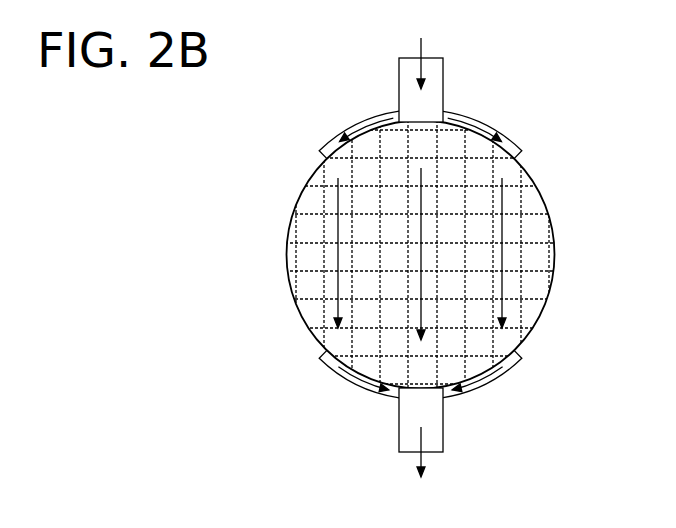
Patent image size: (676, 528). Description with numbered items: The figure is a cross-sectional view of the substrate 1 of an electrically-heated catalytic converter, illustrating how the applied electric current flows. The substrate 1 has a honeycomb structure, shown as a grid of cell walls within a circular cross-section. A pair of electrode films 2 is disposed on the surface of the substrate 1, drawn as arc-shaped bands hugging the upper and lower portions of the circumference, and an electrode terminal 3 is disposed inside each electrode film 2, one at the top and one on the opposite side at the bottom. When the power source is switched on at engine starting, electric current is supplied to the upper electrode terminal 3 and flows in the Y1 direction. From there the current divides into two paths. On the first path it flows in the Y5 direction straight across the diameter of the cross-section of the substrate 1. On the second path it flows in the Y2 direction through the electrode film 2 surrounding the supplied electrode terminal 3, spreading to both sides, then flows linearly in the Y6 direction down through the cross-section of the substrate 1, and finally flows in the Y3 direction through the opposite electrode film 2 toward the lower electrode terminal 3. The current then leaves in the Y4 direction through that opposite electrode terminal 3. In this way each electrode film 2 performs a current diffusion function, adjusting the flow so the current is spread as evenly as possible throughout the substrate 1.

The substrate 1 is at (552, 287).
The electrode film 2 is at (523, 150).
The electrode terminal 3 is at (433, 88).
The Y1 direction Y1 is at (420, 49).
The Y2 direction Y2 is at (417, 123).
The Y3 direction Y3 is at (417, 390).
The Y4 direction Y4 is at (421, 468).
The Y5 direction Y5 is at (436, 254).
The Y6 direction Y6 is at (420, 253).